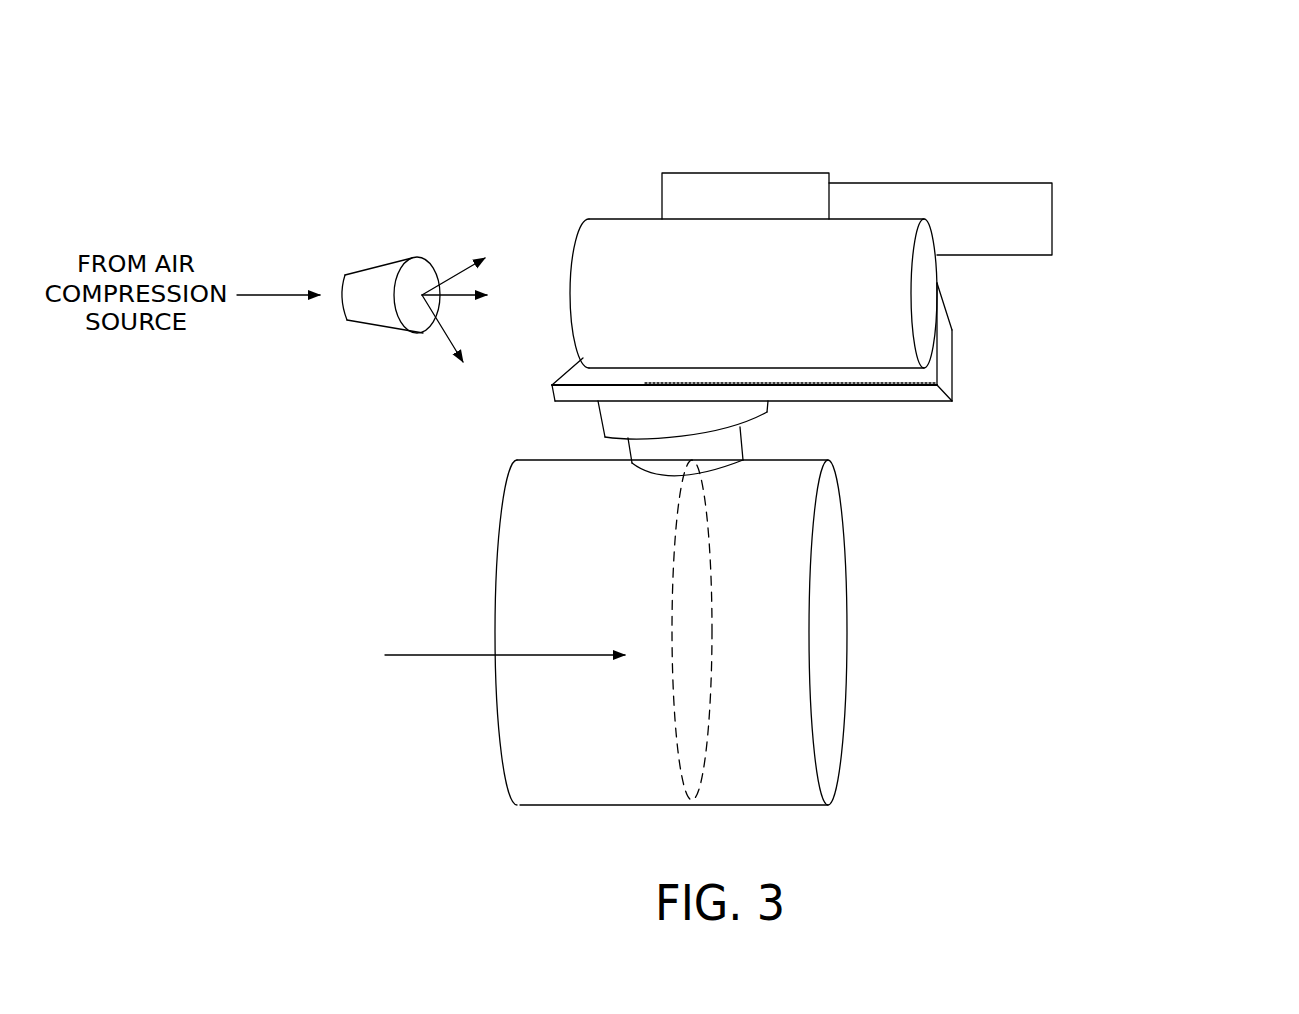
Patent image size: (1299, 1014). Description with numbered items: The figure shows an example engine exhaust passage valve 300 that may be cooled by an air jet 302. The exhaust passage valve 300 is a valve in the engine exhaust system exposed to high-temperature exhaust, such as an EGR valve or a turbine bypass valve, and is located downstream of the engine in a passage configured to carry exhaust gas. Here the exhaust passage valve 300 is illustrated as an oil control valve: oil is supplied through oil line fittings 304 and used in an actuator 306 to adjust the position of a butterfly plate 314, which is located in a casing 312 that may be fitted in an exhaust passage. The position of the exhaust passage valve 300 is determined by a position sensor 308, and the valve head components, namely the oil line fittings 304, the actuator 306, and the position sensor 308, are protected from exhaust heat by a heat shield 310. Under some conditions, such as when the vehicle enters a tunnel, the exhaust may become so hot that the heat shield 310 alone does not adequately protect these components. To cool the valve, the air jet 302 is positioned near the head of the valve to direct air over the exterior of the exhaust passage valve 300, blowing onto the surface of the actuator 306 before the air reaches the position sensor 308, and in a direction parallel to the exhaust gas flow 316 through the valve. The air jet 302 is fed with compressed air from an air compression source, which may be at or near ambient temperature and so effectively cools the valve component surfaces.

The exhaust passage valve 300 is at (1226, 80).
The air jet 302 is at (403, 255).
The oil line fittings 304 is at (755, 172).
The actuator 306 is at (893, 315).
The position sensor 308 is at (1023, 183).
The heat shield 310 is at (882, 378).
The casing 312 is at (833, 623).
The butterfly plate 314 is at (707, 602).
The exhaust gas flow 316 is at (430, 655).